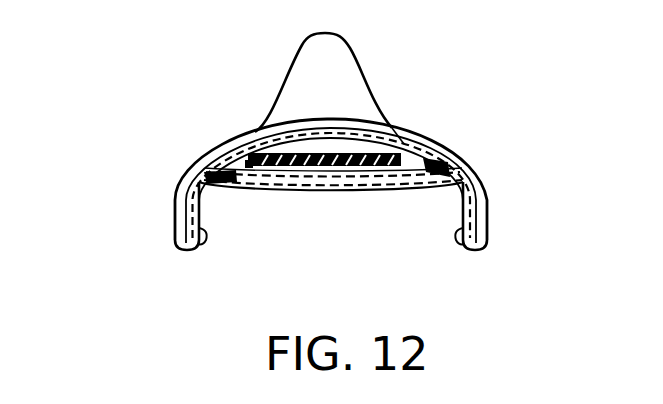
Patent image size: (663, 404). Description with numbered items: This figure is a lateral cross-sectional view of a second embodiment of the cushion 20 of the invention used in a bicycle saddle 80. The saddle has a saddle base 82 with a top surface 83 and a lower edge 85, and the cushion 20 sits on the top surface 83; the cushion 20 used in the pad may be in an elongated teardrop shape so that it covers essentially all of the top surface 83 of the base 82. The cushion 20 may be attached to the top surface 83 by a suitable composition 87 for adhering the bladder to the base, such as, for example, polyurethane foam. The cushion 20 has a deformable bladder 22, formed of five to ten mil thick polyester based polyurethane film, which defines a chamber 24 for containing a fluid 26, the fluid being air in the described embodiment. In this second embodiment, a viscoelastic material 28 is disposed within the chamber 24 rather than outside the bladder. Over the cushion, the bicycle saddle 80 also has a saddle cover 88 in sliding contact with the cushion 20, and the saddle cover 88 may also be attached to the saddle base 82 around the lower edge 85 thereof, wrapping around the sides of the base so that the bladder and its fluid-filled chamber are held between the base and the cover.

The bicycle saddle 80 is at (235, 61).
The cushion 20 is at (394, 122).
The deformable bladder 22 is at (212, 150).
The chamber 24 is at (405, 137).
The fluid 26 is at (432, 150).
The viscoelastic material 28 is at (265, 186).
The saddle base 82 is at (380, 188).
The top surface 83 is at (177, 173).
The lower edge 85 is at (459, 229).
The composition 87 is at (334, 186).
The saddle cover 88 is at (478, 172).